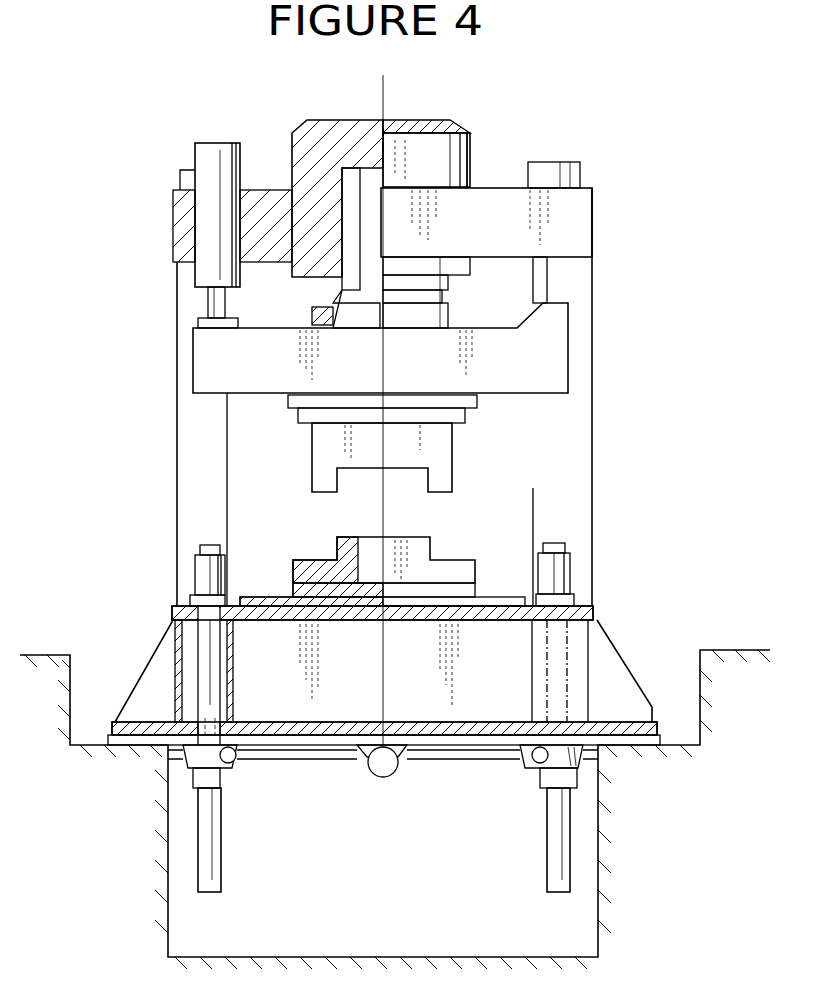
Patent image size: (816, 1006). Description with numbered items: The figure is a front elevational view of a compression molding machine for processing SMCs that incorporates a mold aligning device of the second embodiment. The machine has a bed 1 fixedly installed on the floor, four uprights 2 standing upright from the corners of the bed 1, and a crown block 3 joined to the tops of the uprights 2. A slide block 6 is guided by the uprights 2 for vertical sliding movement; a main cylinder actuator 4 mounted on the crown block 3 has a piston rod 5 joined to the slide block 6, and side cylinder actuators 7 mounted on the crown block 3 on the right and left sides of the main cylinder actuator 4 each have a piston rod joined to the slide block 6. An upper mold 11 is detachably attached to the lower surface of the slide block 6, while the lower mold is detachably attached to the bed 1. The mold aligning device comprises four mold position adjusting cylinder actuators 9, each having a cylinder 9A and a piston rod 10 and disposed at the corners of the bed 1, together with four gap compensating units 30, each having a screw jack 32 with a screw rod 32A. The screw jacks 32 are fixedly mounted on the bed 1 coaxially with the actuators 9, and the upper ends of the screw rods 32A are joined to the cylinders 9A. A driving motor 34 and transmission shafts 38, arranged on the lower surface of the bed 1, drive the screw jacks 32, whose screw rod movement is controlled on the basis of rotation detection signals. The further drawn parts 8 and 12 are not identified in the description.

The bed 1 is at (612, 635).
The uprights 2 is at (178, 504).
The crown block 3 is at (581, 241).
The main cylinder actuator 4 is at (460, 155).
The piston rod 5 is at (333, 162).
The slide block 6 is at (555, 348).
The side cylinder actuators 7 is at (195, 153).
The guide rod 8 is at (208, 308).
The mold position adjusting cylinder actuators 9 is at (188, 578).
The cylinder 9A is at (193, 595).
The piston rod 10 is at (200, 548).
The upper mold 11 is at (452, 445).
The lower die 12 is at (462, 563).
The gap compensating units 30 is at (225, 791).
The screw jack 32 is at (220, 763).
The screw rod 32A is at (215, 668).
The driving motor 34 is at (383, 779).
The transmission shafts 38 is at (325, 760).